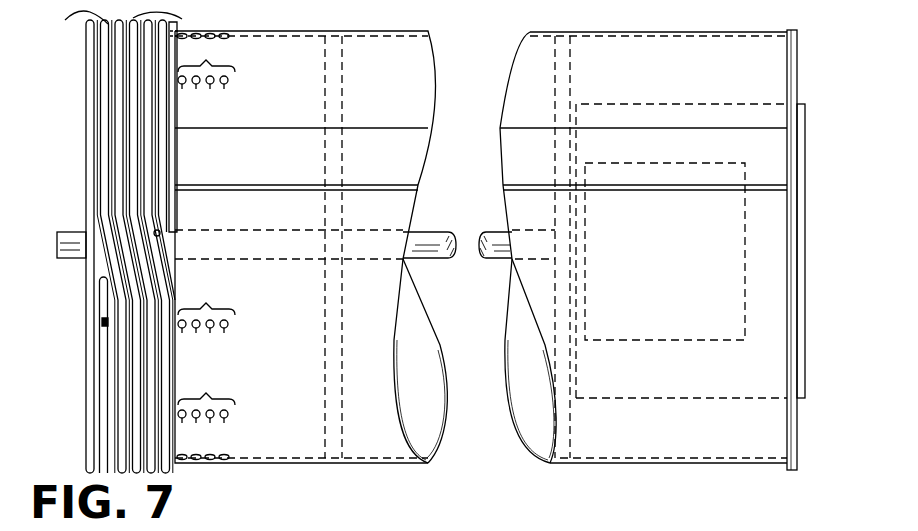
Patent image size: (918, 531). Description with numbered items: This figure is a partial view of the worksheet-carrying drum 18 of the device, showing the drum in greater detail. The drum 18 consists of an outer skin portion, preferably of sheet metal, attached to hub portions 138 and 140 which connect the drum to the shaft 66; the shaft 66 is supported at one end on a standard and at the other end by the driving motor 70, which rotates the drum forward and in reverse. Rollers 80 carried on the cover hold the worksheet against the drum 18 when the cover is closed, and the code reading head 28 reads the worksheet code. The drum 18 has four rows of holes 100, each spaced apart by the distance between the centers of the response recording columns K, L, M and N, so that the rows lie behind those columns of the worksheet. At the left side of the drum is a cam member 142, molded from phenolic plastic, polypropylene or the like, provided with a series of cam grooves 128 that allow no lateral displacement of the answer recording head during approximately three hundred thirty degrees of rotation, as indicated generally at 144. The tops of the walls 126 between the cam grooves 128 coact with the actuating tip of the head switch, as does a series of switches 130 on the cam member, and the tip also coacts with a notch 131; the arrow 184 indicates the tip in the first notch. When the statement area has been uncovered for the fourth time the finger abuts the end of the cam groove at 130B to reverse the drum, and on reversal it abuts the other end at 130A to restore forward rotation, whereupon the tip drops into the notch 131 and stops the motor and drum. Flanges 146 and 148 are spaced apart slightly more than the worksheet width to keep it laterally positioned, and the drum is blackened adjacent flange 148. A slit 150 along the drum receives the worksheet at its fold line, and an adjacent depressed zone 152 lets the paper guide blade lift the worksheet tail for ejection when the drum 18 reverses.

The drum 18 is at (513, 55).
The code reading head 28 is at (325, 527).
The shaft 66 is at (492, 260).
The driving motor 70 is at (798, 398).
The rollers 80 is at (452, 527).
The rows of holes 100 is at (206, 237).
The walls 126 is at (183, 24).
The cam grooves 128 is at (88, 15).
The switches 130 is at (110, 75).
The end of the cam groove 130A is at (99, 283).
The end of the cam groove 130B is at (160, 233).
The notch 131 is at (86, 242).
The hub portion 138 is at (335, 440).
The hub portion 140 is at (553, 466).
The cam member 142 is at (85, 268).
The region of no lateral displacement 144 is at (118, 242).
The flange 146 is at (200, 30).
The flange 148 is at (793, 27).
The slit 150 is at (503, 190).
The depressed zone 152 is at (500, 146).
The arrow 184 is at (102, 322).